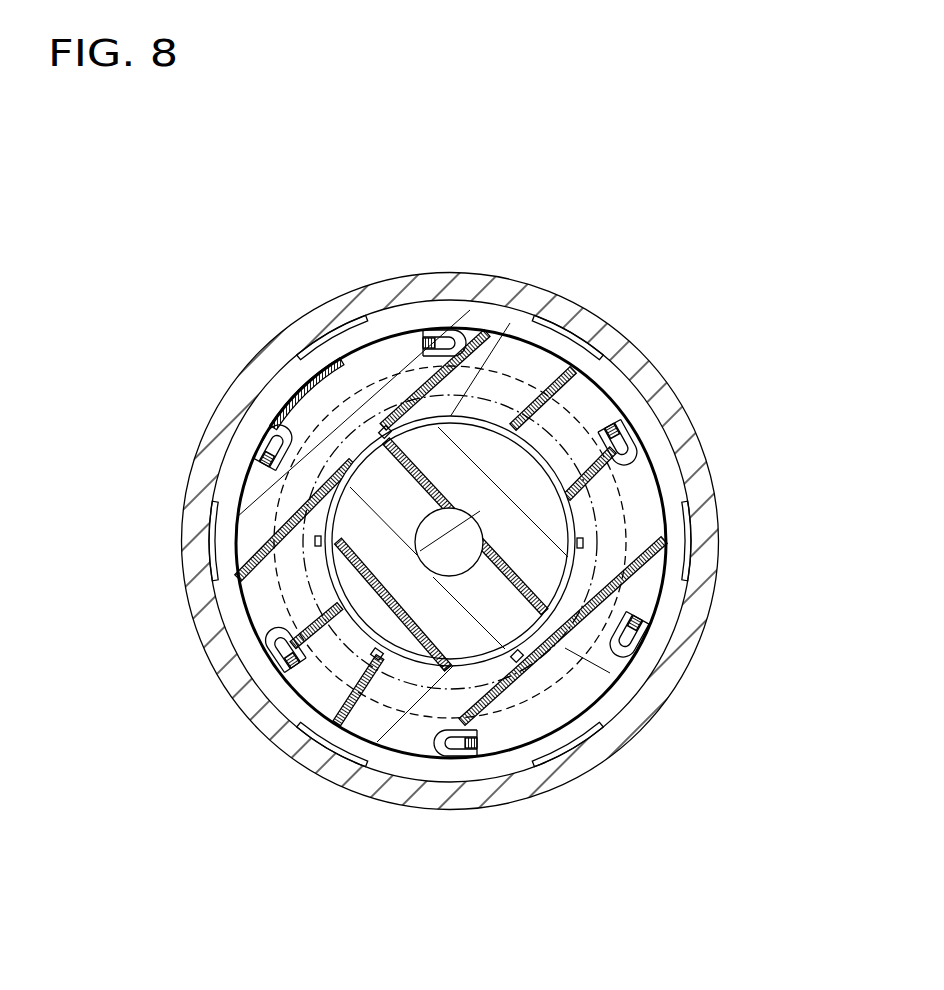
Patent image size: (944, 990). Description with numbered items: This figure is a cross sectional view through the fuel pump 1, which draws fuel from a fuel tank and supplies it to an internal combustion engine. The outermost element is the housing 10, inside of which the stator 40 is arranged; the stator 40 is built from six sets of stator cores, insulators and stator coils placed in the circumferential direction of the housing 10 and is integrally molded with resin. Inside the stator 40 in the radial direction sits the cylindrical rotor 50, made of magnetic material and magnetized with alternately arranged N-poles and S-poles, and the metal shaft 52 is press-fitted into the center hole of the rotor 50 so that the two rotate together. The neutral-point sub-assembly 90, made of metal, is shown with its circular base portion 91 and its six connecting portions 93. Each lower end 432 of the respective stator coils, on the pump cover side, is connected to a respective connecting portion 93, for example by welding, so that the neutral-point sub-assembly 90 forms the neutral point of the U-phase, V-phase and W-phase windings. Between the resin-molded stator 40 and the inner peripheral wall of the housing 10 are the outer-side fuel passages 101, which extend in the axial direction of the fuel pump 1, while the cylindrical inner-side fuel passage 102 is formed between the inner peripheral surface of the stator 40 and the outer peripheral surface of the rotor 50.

The fuel pump 1 is at (289, 218).
The housing 10 is at (247, 368).
The stator 40 is at (668, 457).
The rotor 50 is at (330, 565).
The shaft 52 is at (416, 555).
The neutral-point sub-assembly 90 is at (575, 403).
The base portion 91 is at (515, 330).
The connecting portion 93 is at (444, 332).
The outer-side fuel passage 101 is at (325, 335).
The inner-side fuel passage 102 is at (565, 648).
The lower end of stator coil 432 is at (425, 340).